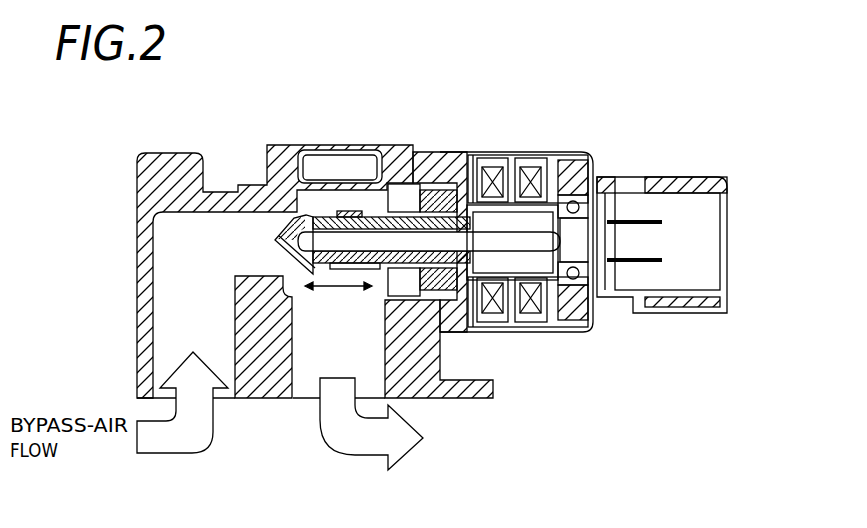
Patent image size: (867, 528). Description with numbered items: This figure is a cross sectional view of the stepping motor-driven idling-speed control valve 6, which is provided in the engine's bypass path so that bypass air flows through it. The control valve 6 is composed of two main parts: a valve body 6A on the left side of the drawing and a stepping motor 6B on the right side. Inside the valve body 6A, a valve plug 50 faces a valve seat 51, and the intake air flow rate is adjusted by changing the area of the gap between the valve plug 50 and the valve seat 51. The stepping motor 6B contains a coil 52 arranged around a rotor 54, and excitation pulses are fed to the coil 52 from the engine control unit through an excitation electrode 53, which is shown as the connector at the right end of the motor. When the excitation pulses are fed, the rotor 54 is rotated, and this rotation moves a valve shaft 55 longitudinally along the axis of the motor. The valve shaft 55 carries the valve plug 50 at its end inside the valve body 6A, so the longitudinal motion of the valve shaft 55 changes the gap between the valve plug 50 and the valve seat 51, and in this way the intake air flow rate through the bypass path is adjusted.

The stepping motor-driven idling-speed control valve 6 is at (427, 117).
The valve body 6A is at (204, 153).
The stepping motor 6B is at (538, 150).
The valve plug 50 is at (282, 230).
The valve seat 51 is at (283, 268).
The coil 52 is at (495, 160).
The excitation electrode 53 is at (667, 221).
The rotor 54 is at (470, 333).
The valve shaft 55 is at (347, 242).